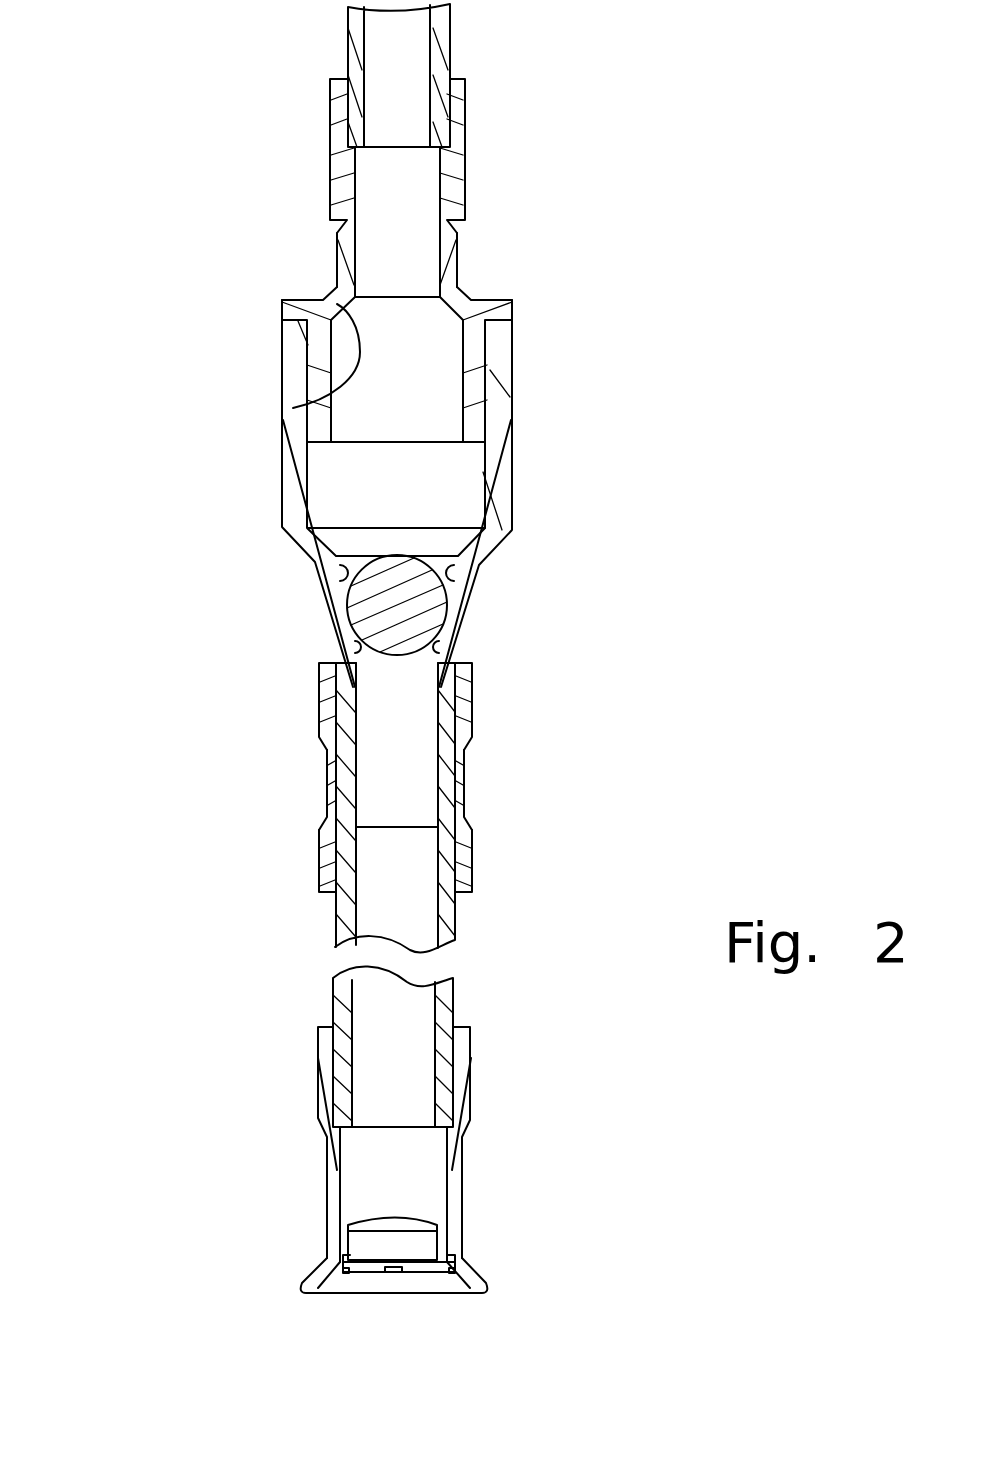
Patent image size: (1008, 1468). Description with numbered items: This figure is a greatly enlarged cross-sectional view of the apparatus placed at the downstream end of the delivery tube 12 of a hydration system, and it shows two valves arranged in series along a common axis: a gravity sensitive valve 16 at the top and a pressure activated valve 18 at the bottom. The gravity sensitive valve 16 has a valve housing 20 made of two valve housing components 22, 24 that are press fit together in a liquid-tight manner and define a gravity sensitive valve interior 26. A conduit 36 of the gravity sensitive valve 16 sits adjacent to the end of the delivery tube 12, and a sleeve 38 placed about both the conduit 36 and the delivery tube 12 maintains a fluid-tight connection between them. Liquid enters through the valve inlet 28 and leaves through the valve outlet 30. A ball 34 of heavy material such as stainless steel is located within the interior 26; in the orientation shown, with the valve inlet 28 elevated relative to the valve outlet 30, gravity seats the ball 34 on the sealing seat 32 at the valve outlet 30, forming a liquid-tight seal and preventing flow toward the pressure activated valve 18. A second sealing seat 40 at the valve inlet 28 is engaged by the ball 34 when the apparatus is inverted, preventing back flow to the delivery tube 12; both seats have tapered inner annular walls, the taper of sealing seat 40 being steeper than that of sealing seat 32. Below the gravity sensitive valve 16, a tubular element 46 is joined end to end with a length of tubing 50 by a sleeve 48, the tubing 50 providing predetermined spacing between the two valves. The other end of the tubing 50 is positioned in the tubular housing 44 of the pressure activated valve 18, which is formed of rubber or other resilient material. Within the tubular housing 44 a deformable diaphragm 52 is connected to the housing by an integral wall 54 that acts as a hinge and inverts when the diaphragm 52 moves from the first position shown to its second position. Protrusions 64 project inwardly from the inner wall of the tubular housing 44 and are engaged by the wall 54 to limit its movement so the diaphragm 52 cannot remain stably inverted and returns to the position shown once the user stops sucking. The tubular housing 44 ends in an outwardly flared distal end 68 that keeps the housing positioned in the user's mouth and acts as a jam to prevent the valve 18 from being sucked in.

The delivery tube 12 is at (355, 60).
The sleeve 38 is at (458, 150).
The conduit 36 is at (347, 262).
The valve inlet 28 is at (412, 273).
The valve housing component 22 is at (477, 313).
The gravity sensitive valve interior 26 is at (433, 402).
The gravity sensitive valve 16 is at (550, 432).
The valve housing 20 is at (283, 378).
The sealing seat 40 is at (293, 408).
The valve housing component 24 is at (478, 552).
The sealing seat 32 is at (346, 578).
The ball 34 is at (413, 603).
The valve outlet 30 is at (357, 653).
The tubular element 46 is at (448, 707).
The sleeve 48 is at (455, 797).
The length of tubing 50 is at (455, 915).
The pressure activated valve 18 is at (490, 1160).
The tubular housing 44 is at (327, 1168).
The deformable diaphragm 52 is at (360, 1220).
The wall 54 is at (350, 1247).
The protrusions 64 is at (343, 1278).
The outwardly flared distal end 68 is at (473, 1283).